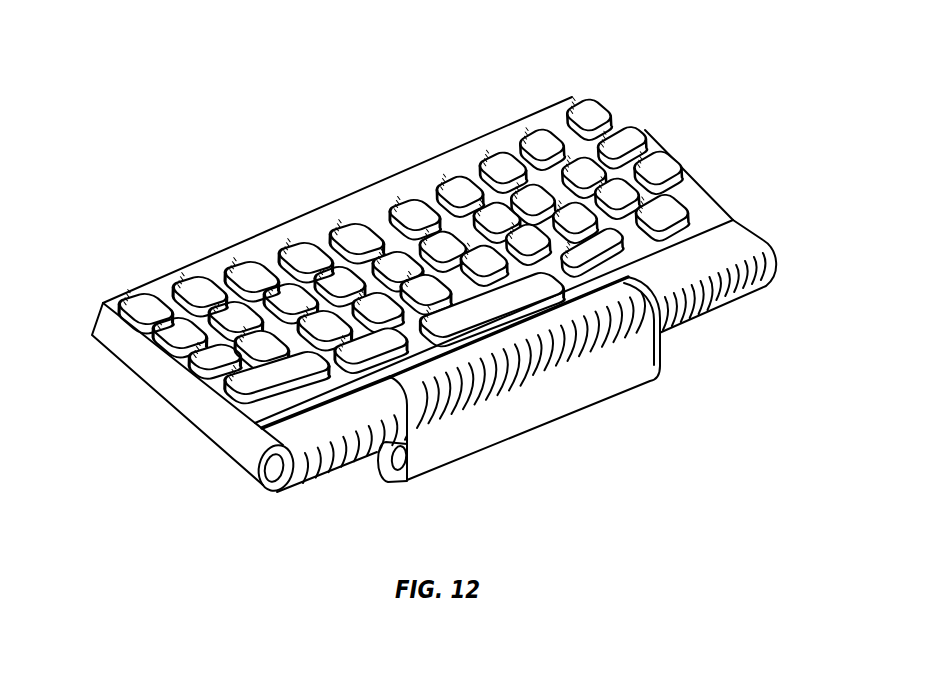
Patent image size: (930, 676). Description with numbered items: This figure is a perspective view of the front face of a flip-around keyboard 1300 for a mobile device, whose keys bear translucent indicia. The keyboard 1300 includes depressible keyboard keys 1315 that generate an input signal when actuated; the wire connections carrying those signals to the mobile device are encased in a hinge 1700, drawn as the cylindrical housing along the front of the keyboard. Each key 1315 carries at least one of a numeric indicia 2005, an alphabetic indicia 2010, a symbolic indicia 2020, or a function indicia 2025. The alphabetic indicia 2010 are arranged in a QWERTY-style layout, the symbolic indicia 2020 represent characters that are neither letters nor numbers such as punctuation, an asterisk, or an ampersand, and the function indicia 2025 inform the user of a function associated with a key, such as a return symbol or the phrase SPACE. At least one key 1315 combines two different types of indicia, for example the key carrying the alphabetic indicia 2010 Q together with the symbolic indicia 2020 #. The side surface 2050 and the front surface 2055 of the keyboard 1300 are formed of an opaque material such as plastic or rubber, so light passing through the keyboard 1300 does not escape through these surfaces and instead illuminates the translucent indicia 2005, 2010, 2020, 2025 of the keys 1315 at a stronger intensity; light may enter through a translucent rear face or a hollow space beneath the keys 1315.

The flip-around keyboard 1300 is at (553, 32).
The symbolic indicia 2020 is at (543, 130).
The keyboard keys 1315 is at (648, 126).
The function indicia 2025 is at (680, 158).
The front surface 2055 is at (704, 266).
The alphabetic indicia 2010 is at (310, 254).
The numeric indicia 2005 is at (235, 273).
The side surface 2050 is at (178, 394).
The hinge 1700 is at (540, 408).